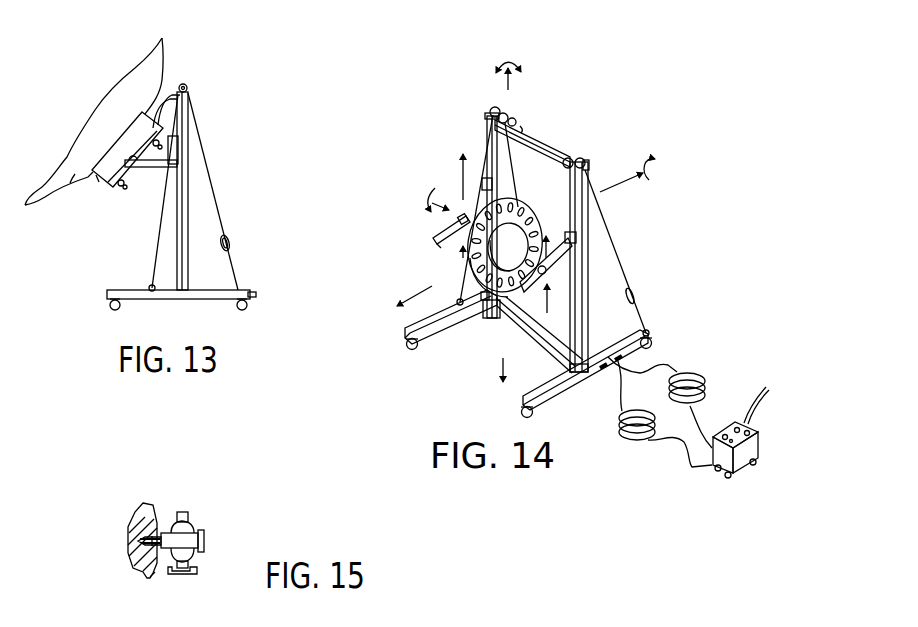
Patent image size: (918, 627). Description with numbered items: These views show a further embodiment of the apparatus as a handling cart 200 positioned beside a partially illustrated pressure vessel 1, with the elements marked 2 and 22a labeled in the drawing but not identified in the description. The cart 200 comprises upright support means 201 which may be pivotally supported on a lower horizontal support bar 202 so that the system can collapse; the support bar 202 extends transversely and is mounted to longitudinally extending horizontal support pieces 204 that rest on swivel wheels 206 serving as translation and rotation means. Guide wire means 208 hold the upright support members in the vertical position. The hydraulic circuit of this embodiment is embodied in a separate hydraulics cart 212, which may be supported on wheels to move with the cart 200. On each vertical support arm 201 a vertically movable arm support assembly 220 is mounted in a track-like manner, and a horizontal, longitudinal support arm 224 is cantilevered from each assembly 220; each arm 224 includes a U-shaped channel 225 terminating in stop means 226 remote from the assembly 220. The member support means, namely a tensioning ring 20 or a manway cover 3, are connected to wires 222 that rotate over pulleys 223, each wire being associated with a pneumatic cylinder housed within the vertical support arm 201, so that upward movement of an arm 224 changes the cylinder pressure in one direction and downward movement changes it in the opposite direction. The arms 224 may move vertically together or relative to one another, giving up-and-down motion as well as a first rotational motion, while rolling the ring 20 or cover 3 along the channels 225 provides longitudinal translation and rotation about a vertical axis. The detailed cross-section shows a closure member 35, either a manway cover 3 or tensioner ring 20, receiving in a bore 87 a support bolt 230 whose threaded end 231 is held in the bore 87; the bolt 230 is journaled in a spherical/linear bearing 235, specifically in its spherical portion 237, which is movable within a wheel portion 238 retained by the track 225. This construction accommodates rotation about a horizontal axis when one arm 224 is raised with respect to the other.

In FIG. 13, the workpiece 1 is at (42, 198).
In FIG. 13, the workpiece surface 2 is at (88, 178).
In FIG. 13, the manway cover 3 is at (98, 177).
In FIG. 13, the tensioning ring 20 is at (112, 188).
In FIG. 13, the mounting bracket 22a is at (174, 147).
In FIG. 14, the mounting bracket 22a is at (575, 240).
In FIG. 15, the closure member 35 is at (140, 506).
In FIG. 15, the bore 87 is at (150, 520).
In FIG. 13, the handling cart 200 is at (120, 266).
In FIG. 14, the handling cart 200 is at (452, 119).
In FIG. 13, the upright support means 201 is at (185, 185).
In FIG. 14, the upright support means 201 is at (498, 150).
In FIG. 14, the lower horizontal support bar 202 is at (515, 320).
In FIG. 13, the horizontal support pieces 204 is at (218, 289).
In FIG. 14, the horizontal support pieces 204 is at (455, 320).
In FIG. 13, the swivel wheels 206 is at (248, 298).
In FIG. 14, the swivel wheels 206 is at (652, 341).
In FIG. 13, the guide wire means 208 is at (224, 203).
In FIG. 14, the guide wire means 208 is at (627, 274).
In FIG. 14, the hydraulics cart 212 is at (740, 422).
In FIG. 14, the arm support assembly 220 is at (481, 180).
In FIG. 13, the wires 222 is at (185, 106).
In FIG. 14, the wires 222 is at (492, 163).
In FIG. 13, the pulleys 223 is at (187, 85).
In FIG. 14, the pulleys 223 is at (503, 108).
In FIG. 13, the horizontal longitudinal support arm 224 is at (157, 170).
In FIG. 14, the horizontal longitudinal support arm 224 is at (458, 250).
In FIG. 14, the U-shaped channel 225 is at (432, 239).
In FIG. 15, the U-shaped channel 225 is at (194, 572).
In FIG. 14, the stop means 226 is at (440, 247).
In FIG. 15, the support bolt 230 is at (205, 545).
In FIG. 15, the threaded end 231 is at (165, 533).
In FIG. 15, the spherical/linear bearing 235 is at (198, 553).
In FIG. 15, the spherical portion 237 is at (201, 534).
In FIG. 15, the wheel portion 238 is at (195, 524).